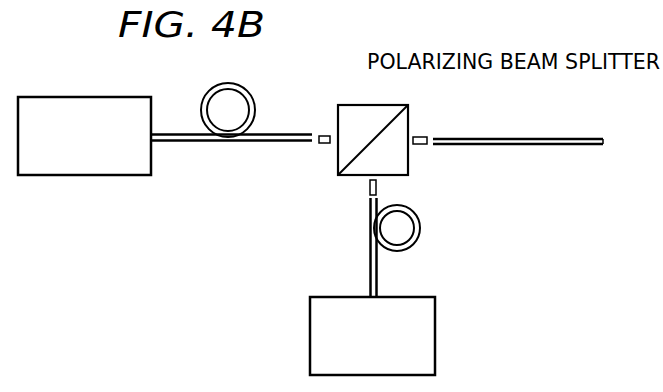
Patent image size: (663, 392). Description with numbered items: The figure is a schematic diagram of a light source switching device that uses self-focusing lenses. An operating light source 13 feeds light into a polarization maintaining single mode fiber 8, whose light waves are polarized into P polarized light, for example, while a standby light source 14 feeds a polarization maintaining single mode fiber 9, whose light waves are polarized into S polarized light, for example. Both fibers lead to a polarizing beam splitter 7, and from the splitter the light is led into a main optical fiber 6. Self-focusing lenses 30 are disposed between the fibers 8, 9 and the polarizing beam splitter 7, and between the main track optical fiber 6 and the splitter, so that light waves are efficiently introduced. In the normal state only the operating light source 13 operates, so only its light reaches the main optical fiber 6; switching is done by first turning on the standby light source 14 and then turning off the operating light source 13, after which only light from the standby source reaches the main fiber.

The operating light source 13 is at (118, 97).
The polarization maintaining single mode fiber 8 is at (254, 96).
The self-focusing lens 30 is at (325, 136).
The polarizing beam splitter 7 is at (384, 105).
The main optical fiber 6 is at (553, 138).
The polarization maintaining single mode fiber 9 is at (421, 230).
The standby light source 14 is at (435, 318).